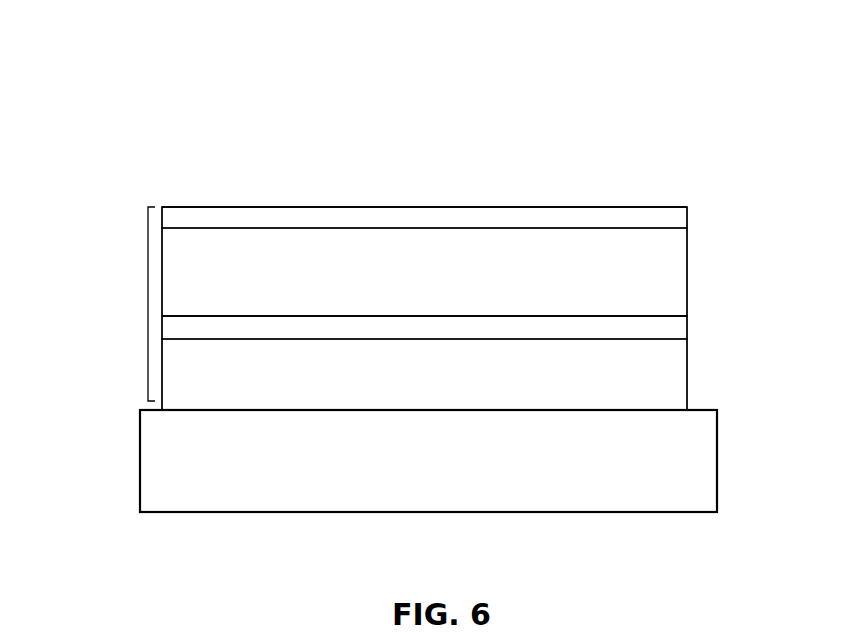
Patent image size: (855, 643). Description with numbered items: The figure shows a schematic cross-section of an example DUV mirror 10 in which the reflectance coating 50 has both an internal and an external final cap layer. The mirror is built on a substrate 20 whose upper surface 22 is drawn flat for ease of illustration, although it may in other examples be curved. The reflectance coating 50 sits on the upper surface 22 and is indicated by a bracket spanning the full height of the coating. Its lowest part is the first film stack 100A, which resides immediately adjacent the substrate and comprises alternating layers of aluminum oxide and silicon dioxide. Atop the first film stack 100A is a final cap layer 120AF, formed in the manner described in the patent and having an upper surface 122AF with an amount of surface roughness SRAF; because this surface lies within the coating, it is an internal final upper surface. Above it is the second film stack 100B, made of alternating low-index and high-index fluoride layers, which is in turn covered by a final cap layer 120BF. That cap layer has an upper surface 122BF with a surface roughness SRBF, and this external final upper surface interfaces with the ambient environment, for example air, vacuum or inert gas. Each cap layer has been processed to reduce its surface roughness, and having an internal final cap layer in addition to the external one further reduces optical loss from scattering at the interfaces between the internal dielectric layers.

The DUV mirror 10 is at (137, 78).
The substrate 20 is at (140, 465).
The upper surface 22 is at (140, 410).
The reflectance coating 50 is at (148, 303).
The first film stack 100A is at (462, 390).
The second film stack 100B is at (462, 292).
The final cap layer 120AF is at (687, 331).
The final cap layer 120BF is at (687, 217).
The internal final upper surface 122AF is at (655, 316).
The external final upper surface 122BF is at (655, 205).
The surface roughness SRAF is at (300, 326).
The surface roughness SRBF is at (549, 188).